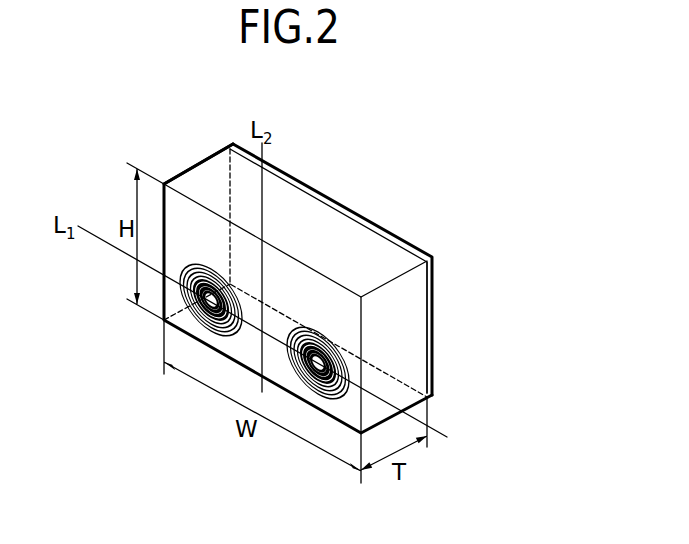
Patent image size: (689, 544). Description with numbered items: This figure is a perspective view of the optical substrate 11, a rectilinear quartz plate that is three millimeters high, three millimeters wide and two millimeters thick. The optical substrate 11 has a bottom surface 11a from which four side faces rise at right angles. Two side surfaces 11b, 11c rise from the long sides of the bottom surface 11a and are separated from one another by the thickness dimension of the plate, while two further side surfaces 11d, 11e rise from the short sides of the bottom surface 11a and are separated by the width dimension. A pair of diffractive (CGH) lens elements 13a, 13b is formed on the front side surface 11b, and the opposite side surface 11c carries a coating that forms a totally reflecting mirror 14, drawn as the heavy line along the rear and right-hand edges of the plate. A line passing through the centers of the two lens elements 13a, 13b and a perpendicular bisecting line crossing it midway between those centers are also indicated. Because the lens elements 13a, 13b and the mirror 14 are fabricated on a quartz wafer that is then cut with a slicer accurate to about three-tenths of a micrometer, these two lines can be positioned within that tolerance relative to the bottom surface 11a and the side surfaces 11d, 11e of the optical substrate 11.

The optical substrate 11 is at (461, 249).
The bottom surface 11a is at (246, 341).
The side surface 11b is at (182, 209).
The side surface 11c is at (307, 208).
The side surface 11d is at (418, 303).
The side surface 11e is at (216, 155).
The diffractive lens element 13a is at (314, 328).
The diffractive lens element 13b is at (206, 267).
The totally reflecting mirror 14 is at (435, 362).